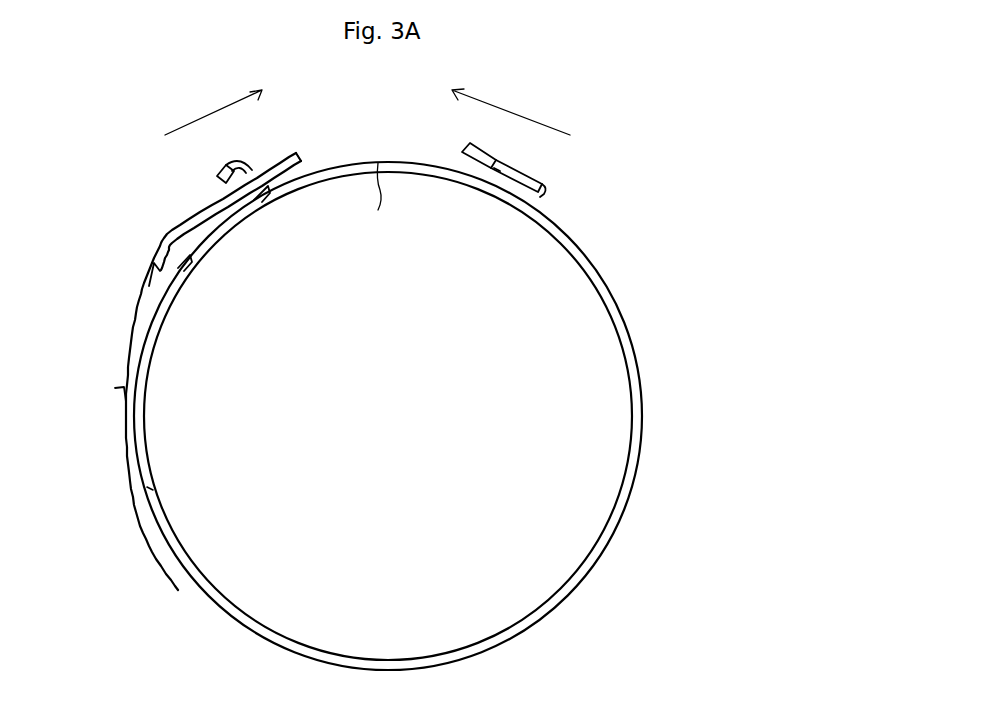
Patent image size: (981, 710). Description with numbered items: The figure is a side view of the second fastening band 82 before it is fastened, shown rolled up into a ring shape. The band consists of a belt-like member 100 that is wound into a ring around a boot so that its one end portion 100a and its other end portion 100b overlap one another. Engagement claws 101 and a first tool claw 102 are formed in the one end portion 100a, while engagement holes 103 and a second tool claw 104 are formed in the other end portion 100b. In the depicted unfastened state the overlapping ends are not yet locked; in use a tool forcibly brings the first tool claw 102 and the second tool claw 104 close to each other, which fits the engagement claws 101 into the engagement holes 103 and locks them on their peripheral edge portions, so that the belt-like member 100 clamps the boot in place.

The fastening band 82 is at (656, 350).
The belt-like member 100 is at (633, 268).
The one end portion 100a is at (376, 200).
The other end portion 100b is at (290, 155).
The engagement claws 101 is at (266, 196).
The first tool claw 102 is at (528, 172).
The engagement holes 103 is at (140, 325).
The second tool claw 104 is at (240, 170).